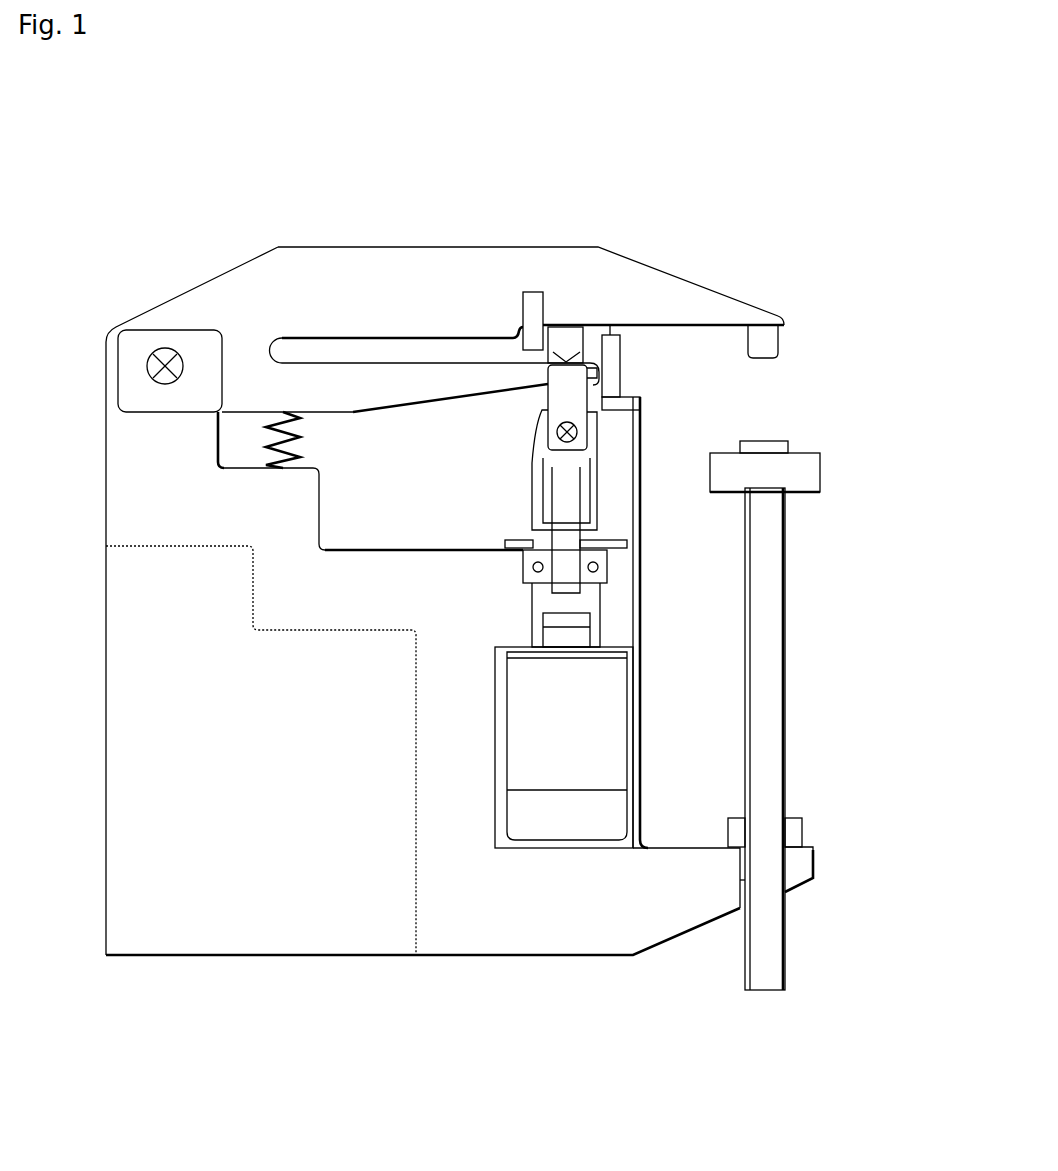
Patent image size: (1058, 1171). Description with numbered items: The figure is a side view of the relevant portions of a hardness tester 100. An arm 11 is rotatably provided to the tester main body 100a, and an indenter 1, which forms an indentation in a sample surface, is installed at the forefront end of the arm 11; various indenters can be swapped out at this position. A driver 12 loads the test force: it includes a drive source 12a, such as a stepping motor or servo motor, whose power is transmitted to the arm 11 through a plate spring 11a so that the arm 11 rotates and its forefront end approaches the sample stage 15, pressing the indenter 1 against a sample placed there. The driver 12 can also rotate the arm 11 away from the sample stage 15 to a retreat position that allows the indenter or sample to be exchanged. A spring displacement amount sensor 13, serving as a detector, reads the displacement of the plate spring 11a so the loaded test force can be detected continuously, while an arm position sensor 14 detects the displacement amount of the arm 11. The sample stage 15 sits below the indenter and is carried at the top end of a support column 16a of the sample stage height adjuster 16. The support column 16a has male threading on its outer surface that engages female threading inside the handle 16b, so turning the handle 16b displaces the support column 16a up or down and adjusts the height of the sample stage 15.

The hardness tester 100 is at (522, 101).
The tester main body 100a is at (130, 452).
The indenter 1 is at (780, 360).
The arm 11 is at (623, 277).
The plate spring 11a is at (397, 393).
The driver 12 is at (567, 525).
The drive source 12a is at (607, 737).
The spring displacement amount sensor 13 is at (533, 303).
The arm position sensor 14 is at (614, 358).
The sample stage 15 is at (822, 478).
The sample stage height adjuster 16 is at (834, 739).
The support column 16a is at (770, 775).
The handle 16b is at (800, 830).